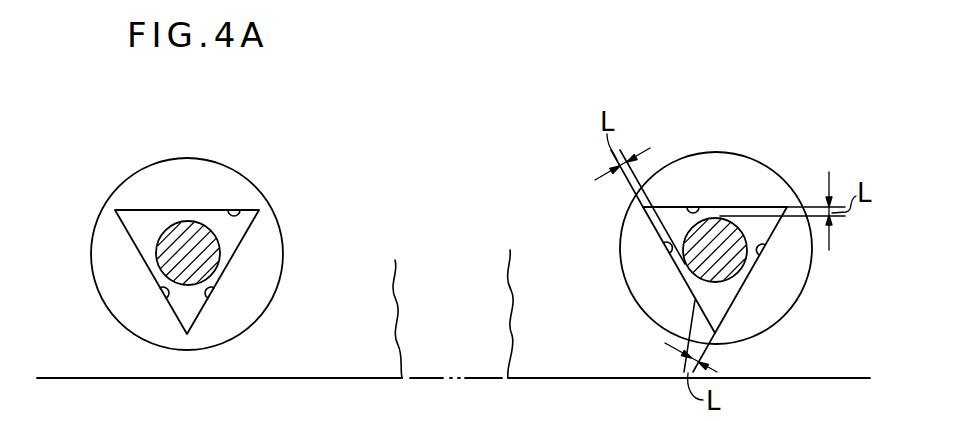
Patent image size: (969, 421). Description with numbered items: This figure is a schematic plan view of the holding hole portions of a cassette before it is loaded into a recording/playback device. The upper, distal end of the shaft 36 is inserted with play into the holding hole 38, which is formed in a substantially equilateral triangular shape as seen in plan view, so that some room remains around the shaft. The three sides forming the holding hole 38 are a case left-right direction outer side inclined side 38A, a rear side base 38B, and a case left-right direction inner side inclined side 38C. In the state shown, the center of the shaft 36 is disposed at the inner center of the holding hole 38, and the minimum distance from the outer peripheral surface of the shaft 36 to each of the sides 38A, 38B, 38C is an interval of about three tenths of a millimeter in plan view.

The shaft 36 is at (222, 255).
The holding hole 38 is at (138, 221).
The case left-right direction outer side inclined side 38A is at (165, 298).
The rear side base 38B is at (238, 208).
The case left-right direction inner side inclined side 38C is at (212, 290).